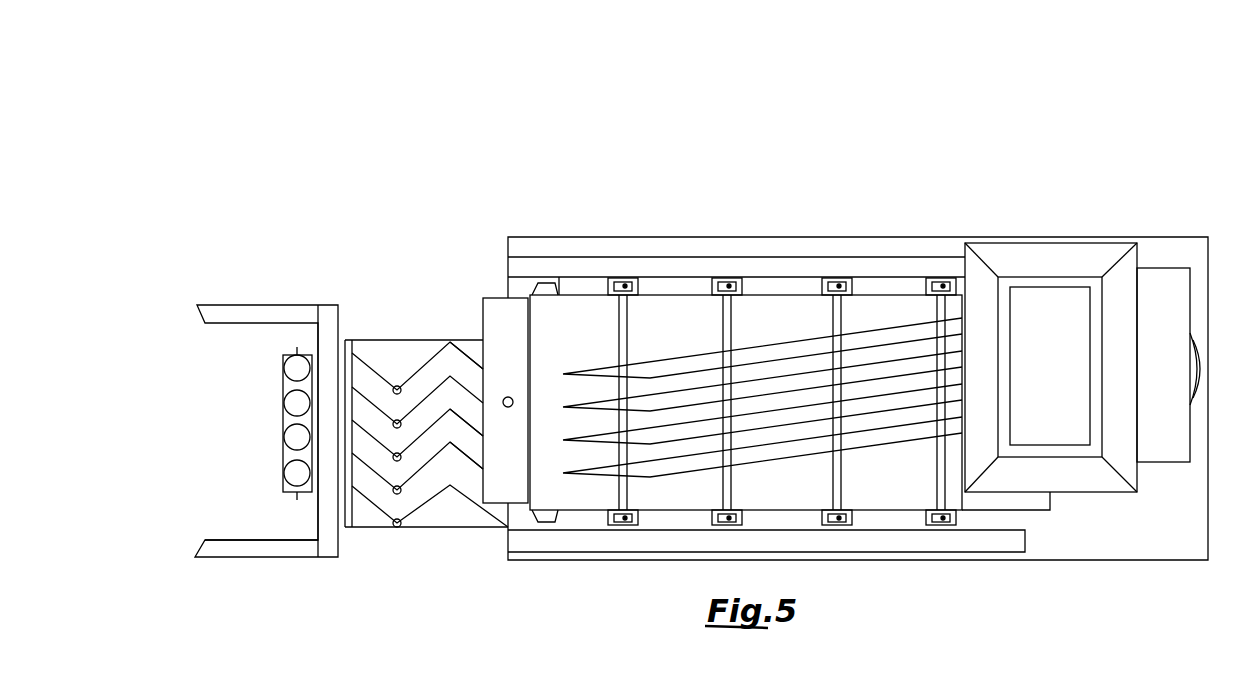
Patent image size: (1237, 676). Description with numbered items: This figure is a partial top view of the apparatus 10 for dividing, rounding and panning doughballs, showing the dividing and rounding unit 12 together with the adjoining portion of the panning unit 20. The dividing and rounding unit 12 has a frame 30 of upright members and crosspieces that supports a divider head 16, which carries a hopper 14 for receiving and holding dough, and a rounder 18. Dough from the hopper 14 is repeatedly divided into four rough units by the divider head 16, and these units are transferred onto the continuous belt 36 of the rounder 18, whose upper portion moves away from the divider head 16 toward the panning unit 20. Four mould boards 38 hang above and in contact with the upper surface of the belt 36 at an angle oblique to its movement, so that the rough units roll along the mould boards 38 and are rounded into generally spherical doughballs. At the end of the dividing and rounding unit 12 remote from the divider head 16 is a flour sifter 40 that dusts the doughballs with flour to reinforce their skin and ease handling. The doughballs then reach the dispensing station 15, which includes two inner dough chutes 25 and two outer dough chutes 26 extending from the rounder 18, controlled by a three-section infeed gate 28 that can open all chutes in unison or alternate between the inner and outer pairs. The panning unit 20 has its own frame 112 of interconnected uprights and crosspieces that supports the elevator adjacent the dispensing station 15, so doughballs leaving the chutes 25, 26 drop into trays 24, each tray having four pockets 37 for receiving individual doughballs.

The apparatus 10 is at (639, 118).
The dividing and rounding unit 12 is at (780, 172).
The hopper 14 is at (1082, 257).
The dispensing station 15 is at (392, 333).
The divider head 16 is at (1030, 232).
The rounder 18 is at (797, 237).
The panning unit 20 is at (250, 285).
The trays 24 is at (287, 385).
The inner dough chutes 25 is at (470, 422).
The outer dough chutes 26 is at (473, 378).
The infeed gate 28 is at (345, 330).
The frame 30 is at (901, 248).
The continuous belt 36 is at (665, 327).
The pockets 37 is at (300, 473).
The mould boards 38 is at (886, 403).
The flour sifter 40 is at (502, 308).
The frame 112 is at (248, 548).